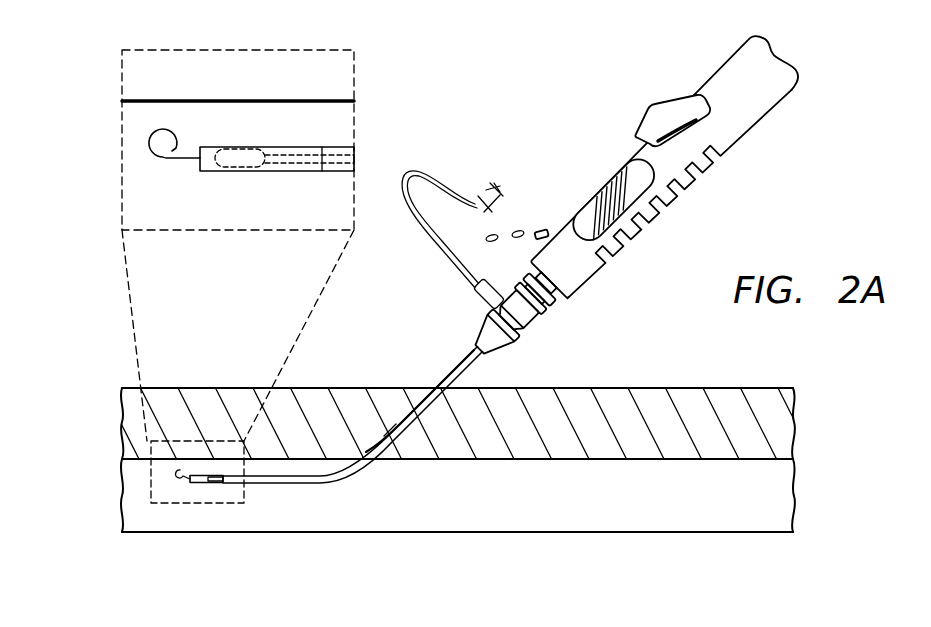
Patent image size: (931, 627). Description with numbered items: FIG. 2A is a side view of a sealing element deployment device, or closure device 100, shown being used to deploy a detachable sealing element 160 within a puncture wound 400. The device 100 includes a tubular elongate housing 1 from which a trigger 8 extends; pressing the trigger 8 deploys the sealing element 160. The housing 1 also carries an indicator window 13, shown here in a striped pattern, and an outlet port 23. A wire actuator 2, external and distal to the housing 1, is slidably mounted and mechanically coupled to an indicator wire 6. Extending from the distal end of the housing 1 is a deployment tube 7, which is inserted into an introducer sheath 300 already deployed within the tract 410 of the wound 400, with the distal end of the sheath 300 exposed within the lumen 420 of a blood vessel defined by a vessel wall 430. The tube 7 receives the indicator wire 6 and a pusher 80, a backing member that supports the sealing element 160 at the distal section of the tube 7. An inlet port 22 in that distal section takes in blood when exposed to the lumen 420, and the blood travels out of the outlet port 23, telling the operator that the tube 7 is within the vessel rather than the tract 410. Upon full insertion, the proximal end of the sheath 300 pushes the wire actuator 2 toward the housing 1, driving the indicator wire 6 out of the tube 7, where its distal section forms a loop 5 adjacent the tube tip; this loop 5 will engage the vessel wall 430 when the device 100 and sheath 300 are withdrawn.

The closure device 100 is at (550, 46).
The housing 1 is at (626, 212).
The trigger 8 is at (650, 127).
The indicator window 13 is at (606, 176).
The outlet port 23 is at (545, 231).
The wire actuator 2 is at (566, 311).
The introducer sheath 300 is at (338, 147).
The puncture wound 400 is at (425, 384).
The tract 410 is at (432, 423).
The vessel wall 430 is at (756, 459).
The lumen 420 is at (706, 520).
The sealing element 160 is at (235, 147).
The pusher 80 is at (300, 147).
The loop 5 is at (150, 129).
The indicator wire 6 is at (140, 153).
The deployment tube 7 is at (283, 180).
The inlet port 22 is at (212, 481).